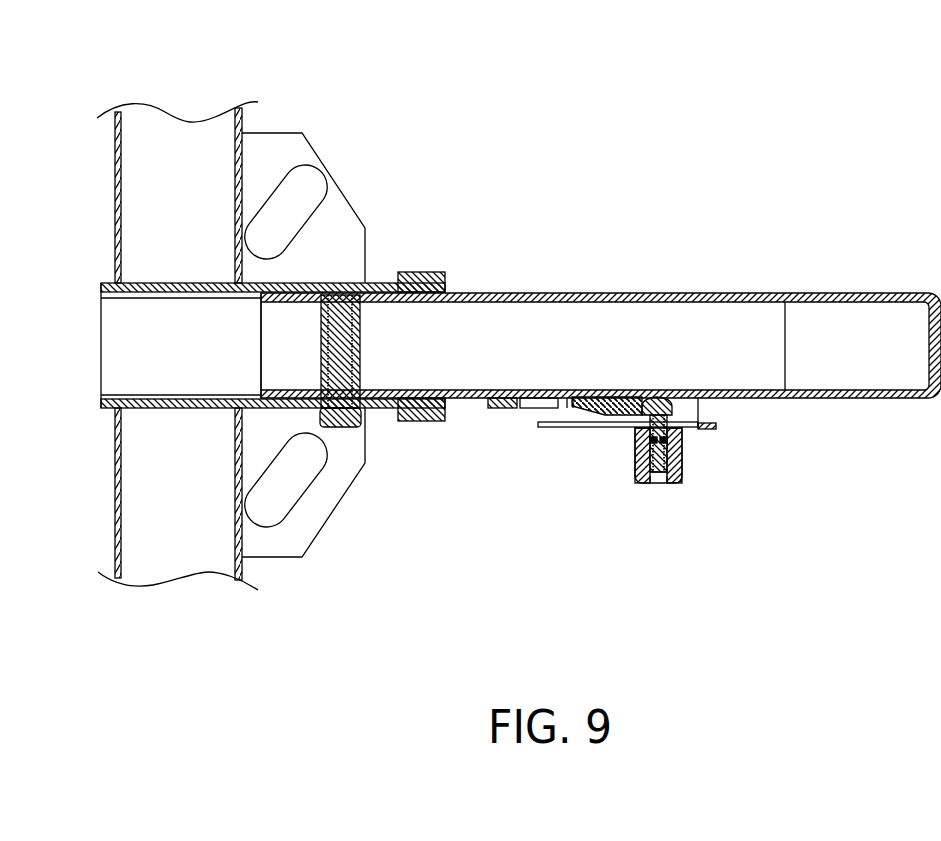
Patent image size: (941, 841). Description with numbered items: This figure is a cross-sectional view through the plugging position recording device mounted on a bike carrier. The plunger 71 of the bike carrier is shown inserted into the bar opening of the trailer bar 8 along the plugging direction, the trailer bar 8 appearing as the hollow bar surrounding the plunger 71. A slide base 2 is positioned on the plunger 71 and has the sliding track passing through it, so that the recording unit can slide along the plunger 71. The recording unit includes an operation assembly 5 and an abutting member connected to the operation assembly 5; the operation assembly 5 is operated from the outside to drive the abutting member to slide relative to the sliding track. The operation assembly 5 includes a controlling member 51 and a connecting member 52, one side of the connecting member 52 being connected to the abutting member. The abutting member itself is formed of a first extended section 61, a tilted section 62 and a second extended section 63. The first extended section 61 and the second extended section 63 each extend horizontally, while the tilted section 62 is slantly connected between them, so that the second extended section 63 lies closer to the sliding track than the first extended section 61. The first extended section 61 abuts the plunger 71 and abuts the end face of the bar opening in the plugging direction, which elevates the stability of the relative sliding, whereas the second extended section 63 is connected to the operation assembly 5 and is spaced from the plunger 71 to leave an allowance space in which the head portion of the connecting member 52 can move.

The slide base 2 is at (543, 413).
The operation assembly 5 is at (743, 440).
The trailer bar 8 is at (410, 272).
The controlling member 51 is at (695, 465).
The connecting member 52 is at (690, 412).
The first extended section 61 is at (493, 408).
The tilted section 62 is at (602, 412).
The second extended section 63 is at (625, 415).
The plunger 71 is at (862, 294).